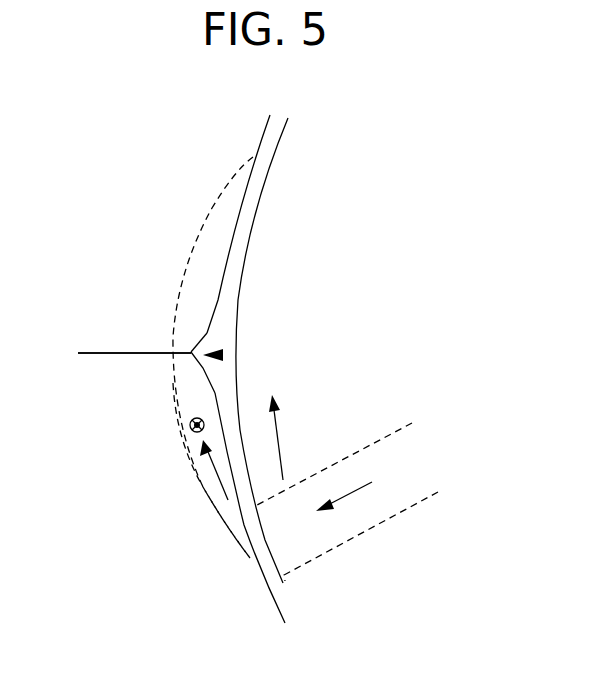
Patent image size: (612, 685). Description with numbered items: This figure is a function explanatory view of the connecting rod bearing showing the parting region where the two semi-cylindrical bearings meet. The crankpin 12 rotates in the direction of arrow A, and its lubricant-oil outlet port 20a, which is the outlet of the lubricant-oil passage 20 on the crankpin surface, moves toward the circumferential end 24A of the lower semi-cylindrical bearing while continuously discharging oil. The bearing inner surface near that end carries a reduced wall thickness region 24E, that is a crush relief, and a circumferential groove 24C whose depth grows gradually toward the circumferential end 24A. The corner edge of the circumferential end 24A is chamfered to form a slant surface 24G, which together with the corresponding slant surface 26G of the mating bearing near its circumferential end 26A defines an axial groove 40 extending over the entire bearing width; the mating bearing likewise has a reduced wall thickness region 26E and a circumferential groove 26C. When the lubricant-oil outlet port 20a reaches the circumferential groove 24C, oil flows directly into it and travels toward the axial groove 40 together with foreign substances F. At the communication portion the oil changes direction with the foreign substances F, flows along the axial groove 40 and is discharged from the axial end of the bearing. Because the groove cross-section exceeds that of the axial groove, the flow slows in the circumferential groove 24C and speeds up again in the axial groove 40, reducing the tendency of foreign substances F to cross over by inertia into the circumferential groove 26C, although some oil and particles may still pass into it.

The crankpin 12 is at (467, 413).
The lubricant-oil passage 20 is at (365, 532).
The lubricant-oil outlet port 20a is at (268, 557).
The circumferential end 24A is at (107, 353).
The circumferential groove 24C is at (210, 495).
The reduced wall thickness region 24E is at (215, 393).
The slant surface 24G is at (200, 365).
The circumferential end 26A is at (92, 353).
The circumferential groove 26C is at (212, 208).
The reduced wall thickness region 26E is at (215, 305).
The slant surface 26G is at (197, 347).
The axial groove 40 is at (222, 355).
The foreign substances F is at (190, 430).
The arrow A is at (287, 437).